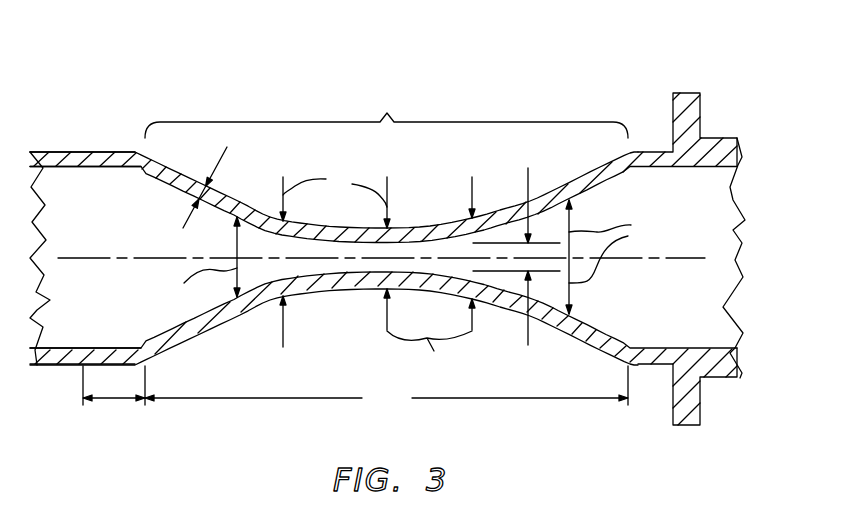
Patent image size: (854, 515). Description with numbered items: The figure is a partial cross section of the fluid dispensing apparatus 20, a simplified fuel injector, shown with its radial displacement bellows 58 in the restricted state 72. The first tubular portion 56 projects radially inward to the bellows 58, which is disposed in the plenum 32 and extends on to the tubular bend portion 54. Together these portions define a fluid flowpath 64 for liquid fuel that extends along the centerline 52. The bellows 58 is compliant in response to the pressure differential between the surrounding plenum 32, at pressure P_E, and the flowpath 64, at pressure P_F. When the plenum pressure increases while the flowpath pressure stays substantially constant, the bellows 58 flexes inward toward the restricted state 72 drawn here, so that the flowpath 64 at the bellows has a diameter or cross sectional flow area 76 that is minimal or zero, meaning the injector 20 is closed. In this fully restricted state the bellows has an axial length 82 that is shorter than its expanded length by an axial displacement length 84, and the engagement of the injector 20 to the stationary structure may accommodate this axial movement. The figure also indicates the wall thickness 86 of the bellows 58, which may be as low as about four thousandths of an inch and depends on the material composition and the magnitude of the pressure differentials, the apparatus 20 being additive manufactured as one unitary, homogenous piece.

The fluid dispensing apparatus 20 is at (627, 84).
The plenum 32 is at (285, 93).
The centerline 52 is at (87, 261).
The tubular bend portion 54 is at (84, 151).
The first tubular portion 56 is at (718, 138).
The radial displacement bellows 58 is at (383, 226).
The fluid flowpath 64 is at (111, 224).
The restricted state 72 is at (566, 111).
The cross sectional flow area 76 is at (523, 330).
The axial length 82 is at (386, 390).
The axial displacement length 84 is at (115, 405).
The wall thickness 86 is at (232, 165).